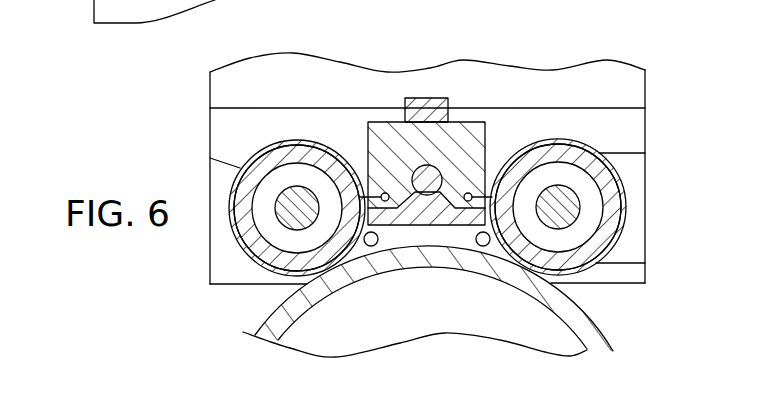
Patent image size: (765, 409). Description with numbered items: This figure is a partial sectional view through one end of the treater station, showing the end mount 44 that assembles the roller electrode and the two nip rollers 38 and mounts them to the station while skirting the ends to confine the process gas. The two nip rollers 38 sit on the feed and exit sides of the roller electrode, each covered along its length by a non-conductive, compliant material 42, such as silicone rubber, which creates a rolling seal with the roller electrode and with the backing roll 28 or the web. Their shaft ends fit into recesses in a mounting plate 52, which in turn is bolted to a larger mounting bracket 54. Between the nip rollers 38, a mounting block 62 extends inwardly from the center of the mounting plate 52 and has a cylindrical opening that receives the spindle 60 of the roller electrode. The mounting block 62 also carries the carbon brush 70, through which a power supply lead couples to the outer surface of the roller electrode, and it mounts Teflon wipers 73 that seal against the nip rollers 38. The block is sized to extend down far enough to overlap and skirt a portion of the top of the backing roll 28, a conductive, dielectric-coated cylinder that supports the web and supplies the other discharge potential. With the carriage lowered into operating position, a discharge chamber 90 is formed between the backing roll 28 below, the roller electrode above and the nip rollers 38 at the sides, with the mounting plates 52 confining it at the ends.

The backing roll 28 is at (597, 331).
The nip rollers 38 is at (268, 185).
The compliant material 42 is at (242, 170).
The end mounts 44 is at (645, 70).
The mounting plate 52 is at (242, 282).
The mounting bracket 54 is at (567, 78).
The spindle 60 is at (431, 190).
The mounting block 62 is at (465, 140).
The carbon brush 70 is at (432, 99).
The Teflon wipers 73 is at (370, 193).
The discharge chamber 90 is at (390, 231).